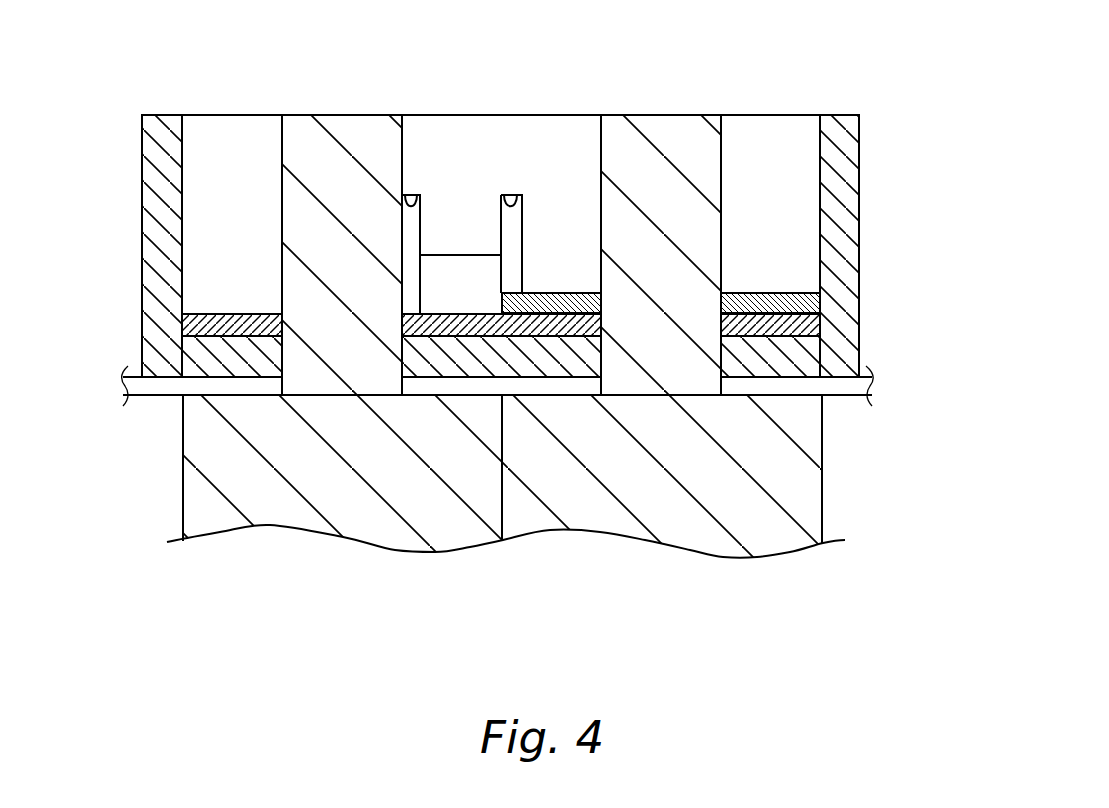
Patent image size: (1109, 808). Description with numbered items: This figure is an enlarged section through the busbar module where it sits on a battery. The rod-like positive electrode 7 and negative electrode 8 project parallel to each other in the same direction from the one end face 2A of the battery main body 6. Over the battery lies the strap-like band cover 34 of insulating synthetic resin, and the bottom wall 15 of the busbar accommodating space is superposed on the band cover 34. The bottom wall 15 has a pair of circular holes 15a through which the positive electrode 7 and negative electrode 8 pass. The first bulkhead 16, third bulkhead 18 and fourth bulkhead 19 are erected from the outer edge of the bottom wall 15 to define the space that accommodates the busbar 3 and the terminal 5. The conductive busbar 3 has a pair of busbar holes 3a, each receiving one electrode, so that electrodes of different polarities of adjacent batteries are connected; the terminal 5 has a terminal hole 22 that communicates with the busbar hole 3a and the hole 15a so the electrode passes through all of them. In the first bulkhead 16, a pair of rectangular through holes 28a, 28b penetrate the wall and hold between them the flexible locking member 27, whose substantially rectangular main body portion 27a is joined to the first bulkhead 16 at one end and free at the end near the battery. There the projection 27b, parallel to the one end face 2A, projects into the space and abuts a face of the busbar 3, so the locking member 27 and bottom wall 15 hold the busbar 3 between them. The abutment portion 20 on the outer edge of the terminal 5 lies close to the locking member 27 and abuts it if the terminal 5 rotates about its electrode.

The one end face 2A is at (208, 401).
The busbar 3 is at (823, 326).
The busbar hole 3a is at (280, 341).
The terminal 5 is at (823, 303).
The battery main body 6 is at (813, 484).
The positive electrode 7 is at (339, 131).
The negative electrode 8 is at (690, 139).
The bottom wall 15 is at (222, 353).
The hole 15a is at (284, 362).
The first bulkhead 16 is at (221, 118).
The third bulkhead 18 is at (148, 172).
The fourth bulkhead 19 is at (845, 187).
The abutment portion 20 is at (537, 292).
The terminal hole 22 is at (745, 296).
The locking member 27 is at (618, 3).
The main body portion 27a is at (441, 212).
The projection 27b is at (464, 267).
The through hole 28a is at (417, 194).
The through hole 28b is at (515, 194).
The band cover 34 is at (870, 388).